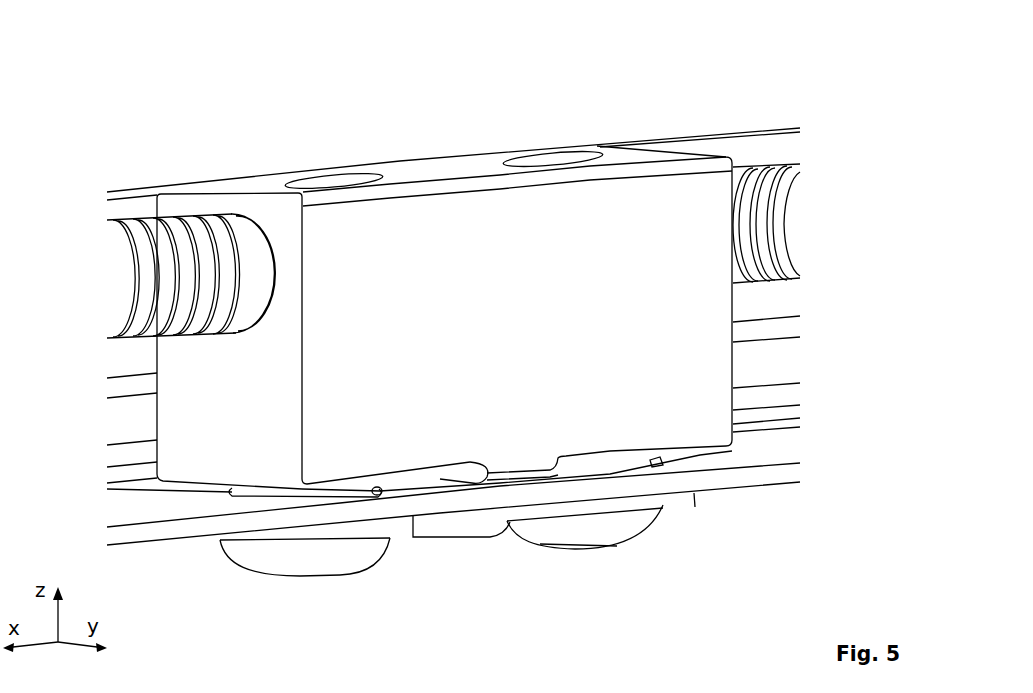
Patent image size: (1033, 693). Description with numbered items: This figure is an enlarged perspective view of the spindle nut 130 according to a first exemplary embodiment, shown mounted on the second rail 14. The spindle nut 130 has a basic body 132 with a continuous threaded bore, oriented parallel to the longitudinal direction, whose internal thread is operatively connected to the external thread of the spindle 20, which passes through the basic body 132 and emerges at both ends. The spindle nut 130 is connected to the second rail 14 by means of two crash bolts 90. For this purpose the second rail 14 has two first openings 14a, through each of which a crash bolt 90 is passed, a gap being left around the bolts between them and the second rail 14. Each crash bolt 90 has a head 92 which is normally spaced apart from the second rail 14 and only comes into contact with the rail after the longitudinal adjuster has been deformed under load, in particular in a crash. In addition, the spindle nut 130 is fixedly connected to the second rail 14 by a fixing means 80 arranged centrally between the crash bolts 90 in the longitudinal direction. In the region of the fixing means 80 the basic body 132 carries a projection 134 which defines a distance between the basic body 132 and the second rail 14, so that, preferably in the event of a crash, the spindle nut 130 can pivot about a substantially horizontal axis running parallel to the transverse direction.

The second rail 14 is at (722, 477).
The first openings 14a is at (360, 495).
The spindle 20 is at (155, 262).
The fixing means 80 is at (438, 520).
The crash bolts 90 is at (441, 585).
The head 92 is at (307, 540).
The spindle nut 130 is at (266, 90).
The basic body 132 is at (457, 265).
The projection 134 is at (508, 470).